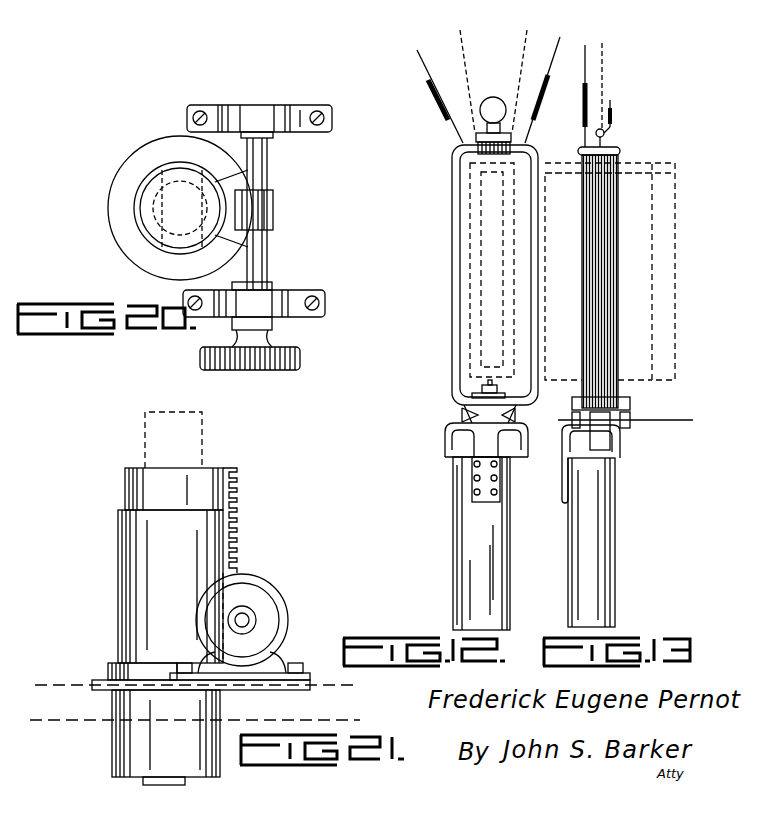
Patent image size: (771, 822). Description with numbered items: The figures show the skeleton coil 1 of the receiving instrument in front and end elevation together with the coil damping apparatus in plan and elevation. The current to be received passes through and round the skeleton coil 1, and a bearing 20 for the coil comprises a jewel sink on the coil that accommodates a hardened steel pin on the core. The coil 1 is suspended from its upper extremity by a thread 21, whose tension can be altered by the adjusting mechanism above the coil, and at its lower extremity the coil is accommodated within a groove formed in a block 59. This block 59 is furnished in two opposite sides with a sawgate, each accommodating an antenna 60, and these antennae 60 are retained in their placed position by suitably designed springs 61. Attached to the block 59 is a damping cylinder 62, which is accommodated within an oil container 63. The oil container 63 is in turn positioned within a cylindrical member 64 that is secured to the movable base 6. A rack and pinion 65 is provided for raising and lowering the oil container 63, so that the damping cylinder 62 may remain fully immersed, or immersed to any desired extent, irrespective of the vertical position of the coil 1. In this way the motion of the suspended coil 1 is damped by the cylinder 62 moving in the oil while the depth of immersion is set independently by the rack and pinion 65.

In FIG. 12, the skeleton coil 1 is at (455, 290).
In FIG. 13, the skeleton coil 1 is at (613, 297).
In FIG. 21, the movable base 6 is at (38, 712).
In FIG. 12, the bearing 20 is at (475, 386).
In FIG. 12, the thread 21 is at (472, 87).
In FIG. 13, the thread 21 is at (607, 77).
In FIG. 12, the block 59 is at (486, 383).
In FIG. 13, the block 59 is at (622, 400).
In FIG. 12, the antenna 60 is at (460, 415).
In FIG. 12, the spring 61 is at (445, 443).
In FIG. 13, the spring 61 is at (601, 440).
In FIG. 12, the damping cylinder 62 is at (487, 580).
In FIG. 13, the damping cylinder 62 is at (575, 570).
In FIG. 21, the oil container 63 is at (188, 485).
In FIG. 21, the cylindrical member 64 is at (153, 525).
In FIG. 20, the rack and pinion 65 is at (253, 210).
In FIG. 21, the rack and pinion 65 is at (233, 568).